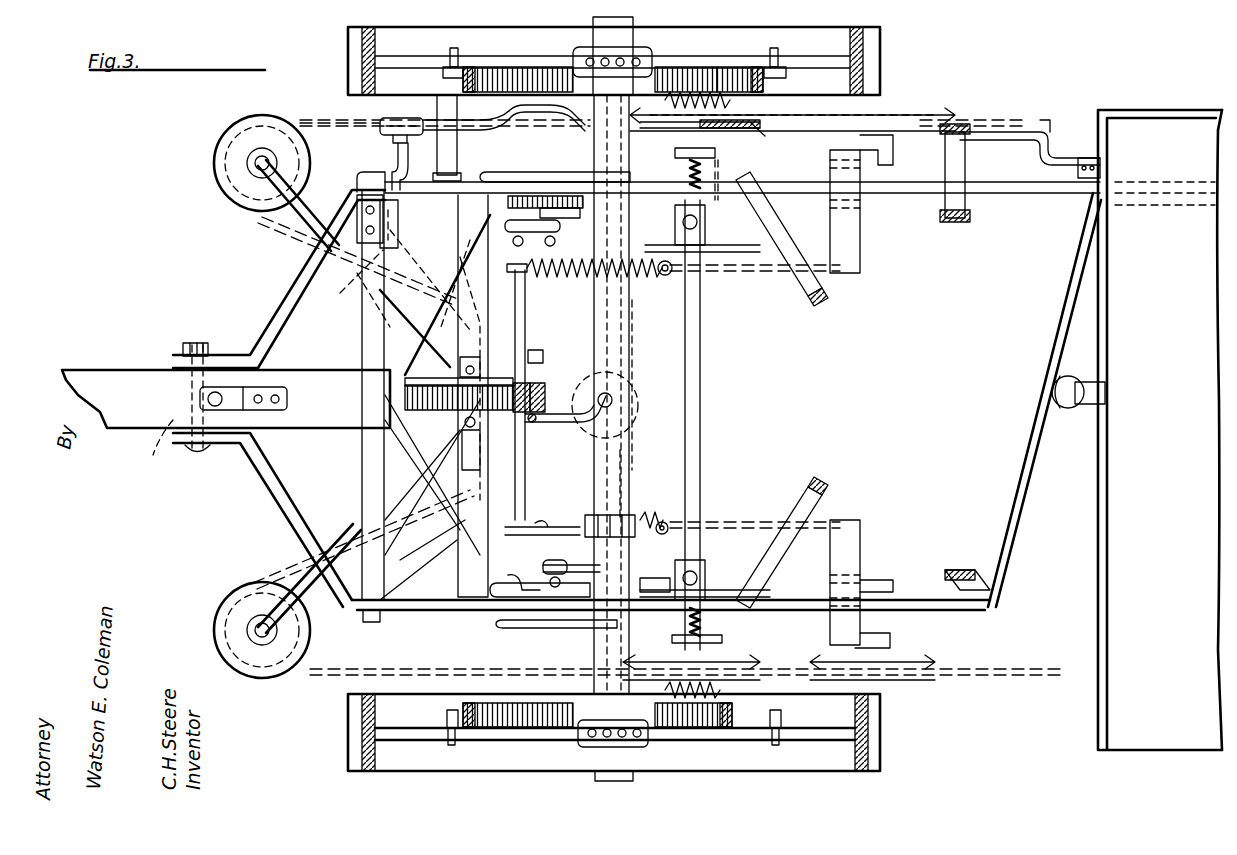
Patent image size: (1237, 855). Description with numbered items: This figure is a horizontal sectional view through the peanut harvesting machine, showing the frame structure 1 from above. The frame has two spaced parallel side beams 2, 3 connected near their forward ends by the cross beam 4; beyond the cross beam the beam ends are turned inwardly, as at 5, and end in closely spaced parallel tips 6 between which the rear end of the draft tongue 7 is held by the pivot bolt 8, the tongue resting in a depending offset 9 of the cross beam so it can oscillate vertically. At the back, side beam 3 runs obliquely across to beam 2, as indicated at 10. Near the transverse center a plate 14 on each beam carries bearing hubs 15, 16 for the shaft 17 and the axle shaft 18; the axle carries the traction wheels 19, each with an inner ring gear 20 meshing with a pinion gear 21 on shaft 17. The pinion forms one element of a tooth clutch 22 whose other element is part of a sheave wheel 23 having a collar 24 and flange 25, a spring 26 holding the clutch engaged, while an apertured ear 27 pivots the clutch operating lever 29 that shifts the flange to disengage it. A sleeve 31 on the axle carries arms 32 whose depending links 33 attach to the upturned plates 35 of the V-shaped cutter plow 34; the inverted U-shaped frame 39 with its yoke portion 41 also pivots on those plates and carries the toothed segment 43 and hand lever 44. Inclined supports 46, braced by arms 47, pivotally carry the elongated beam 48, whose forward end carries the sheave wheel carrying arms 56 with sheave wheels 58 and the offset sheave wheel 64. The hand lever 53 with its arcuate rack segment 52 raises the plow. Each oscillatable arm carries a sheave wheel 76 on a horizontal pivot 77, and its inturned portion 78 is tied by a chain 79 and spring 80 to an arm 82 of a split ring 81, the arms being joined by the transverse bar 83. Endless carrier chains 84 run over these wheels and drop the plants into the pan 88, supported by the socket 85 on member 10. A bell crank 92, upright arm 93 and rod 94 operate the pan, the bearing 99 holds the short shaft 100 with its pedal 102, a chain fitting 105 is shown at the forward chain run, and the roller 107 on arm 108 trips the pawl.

The frame structure 1 is at (282, 284).
The side beam 2 is at (925, 194).
The side beam 3 is at (912, 600).
The cross beam 4 is at (360, 474).
The inwardly turned forward ends 5 is at (282, 503).
The forwardly extending parallel tips 6 is at (360, 154).
The draft tongue 7 is at (112, 382).
The pivot bolt 8 is at (185, 438).
The depending offset 9 is at (340, 383).
The oblique rear portion of side beam 10 is at (1062, 335).
The plate 14 is at (680, 222).
The bearing hub 15 is at (710, 270).
The bearing hub 16 is at (592, 156).
The shaft 17 is at (702, 410).
The axle shaft 18 is at (628, 355).
The traction wheel 19 is at (880, 47).
The ring gear 20 is at (738, 67).
The pinion gear 21 is at (688, 67).
The tooth clutch 22 is at (735, 100).
The sheave wheel 23 is at (736, 138).
The collar 24 is at (735, 145).
The flange 25 is at (710, 225).
The spring 26 is at (718, 630).
The apertured ear 27 is at (648, 575).
The clutch operating lever 29 is at (488, 172).
The sleeve 31 is at (625, 478).
The forwardly extending arm 32 is at (578, 280).
The depending link 33 is at (500, 615).
The cutter plow 34 is at (478, 515).
The upturned plate 35 is at (508, 578).
The inverted U-shaped frame 39 is at (505, 310).
The transverse yoke portion 41 is at (478, 325).
The toothed segment 43 is at (470, 445).
The hand lever 44 is at (470, 360).
The inclined support 46 is at (955, 220).
The brace arm 47 is at (815, 300).
The elongated beam 48 is at (535, 392).
The arcuate rack segment 52 is at (530, 238).
The hand lever 53 is at (523, 198).
The sheave wheel carrying arm 56 is at (275, 187).
The sheave wheel 58 is at (214, 158).
The offset sheave wheel 64 is at (640, 400).
The sheave wheel 76 is at (928, 113).
The horizontal pivot 77 is at (892, 150).
The inturned portion 78 is at (855, 265).
The chain 79 is at (778, 272).
The spring 80 is at (652, 282).
The split ring 81 is at (652, 270).
The arm 82 is at (500, 292).
The transverse bar 83 is at (535, 350).
The endless carrier chain 84 is at (1010, 112).
The socket 85 is at (1068, 400).
The pan 88 is at (1160, 430).
The bell crank 92 is at (1040, 128).
The upright arm 93 is at (560, 128).
The rod 94 is at (780, 130).
The bearing 99 is at (400, 225).
The short shaft 100 is at (356, 178).
The pedal 102 is at (347, 288).
The chain clevis 105 is at (361, 142).
The roller 107 is at (488, 67).
The arm 108 is at (440, 180).